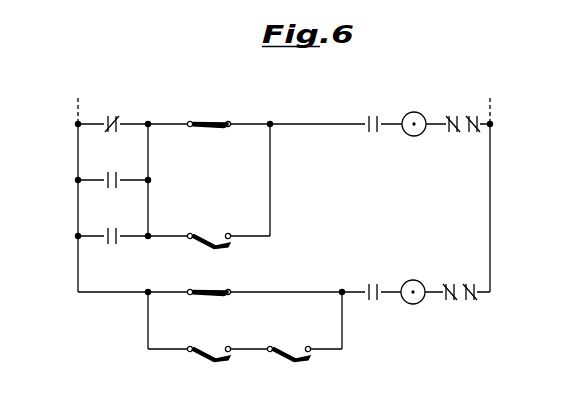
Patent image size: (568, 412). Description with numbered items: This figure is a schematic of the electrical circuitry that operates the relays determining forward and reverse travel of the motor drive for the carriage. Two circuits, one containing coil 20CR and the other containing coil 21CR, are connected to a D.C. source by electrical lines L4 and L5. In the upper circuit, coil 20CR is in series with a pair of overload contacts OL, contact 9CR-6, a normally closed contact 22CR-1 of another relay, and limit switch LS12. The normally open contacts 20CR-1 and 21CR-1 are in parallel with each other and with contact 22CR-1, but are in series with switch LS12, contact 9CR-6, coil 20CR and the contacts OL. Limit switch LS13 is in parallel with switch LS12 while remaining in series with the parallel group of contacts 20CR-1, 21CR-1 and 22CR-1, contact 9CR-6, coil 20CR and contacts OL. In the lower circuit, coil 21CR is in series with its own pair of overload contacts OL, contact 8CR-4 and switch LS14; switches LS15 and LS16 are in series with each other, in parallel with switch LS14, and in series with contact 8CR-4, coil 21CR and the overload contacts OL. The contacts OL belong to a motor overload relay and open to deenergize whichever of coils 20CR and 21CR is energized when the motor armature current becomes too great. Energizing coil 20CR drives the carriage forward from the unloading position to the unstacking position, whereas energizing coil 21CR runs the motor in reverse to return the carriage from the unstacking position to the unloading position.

The electrical line L4 is at (78, 146).
The electrical line L5 is at (490, 200).
The normally closed contact 22CR-1 is at (118, 118).
The normally open contact 20CR-1 is at (118, 174).
The normally open contact 21CR-1 is at (118, 230).
The limit switch LS12 is at (203, 123).
The limit switch LS13 is at (205, 234).
The limit switch LS14 is at (207, 292).
The limit switch LS15 is at (205, 347).
The limit switch LS16 is at (285, 347).
The contact 9CR-6 is at (379, 128).
The coil 20CR is at (424, 119).
The contact 8CR-4 is at (369, 285).
The coil 21CR is at (422, 302).
The overload contacts OL is at (458, 132).